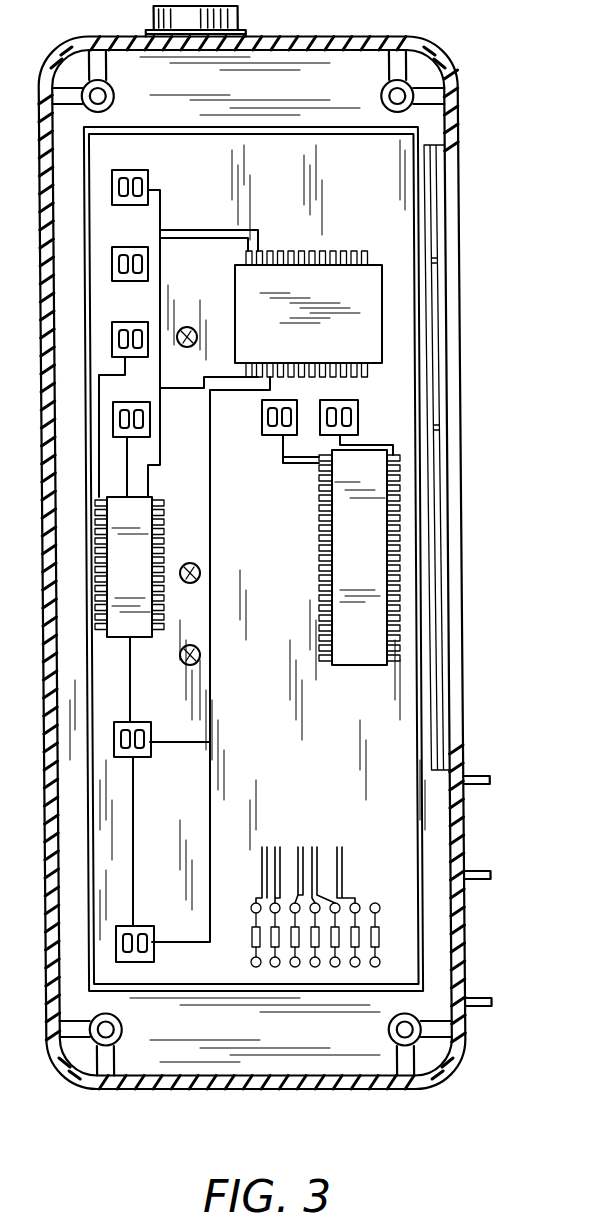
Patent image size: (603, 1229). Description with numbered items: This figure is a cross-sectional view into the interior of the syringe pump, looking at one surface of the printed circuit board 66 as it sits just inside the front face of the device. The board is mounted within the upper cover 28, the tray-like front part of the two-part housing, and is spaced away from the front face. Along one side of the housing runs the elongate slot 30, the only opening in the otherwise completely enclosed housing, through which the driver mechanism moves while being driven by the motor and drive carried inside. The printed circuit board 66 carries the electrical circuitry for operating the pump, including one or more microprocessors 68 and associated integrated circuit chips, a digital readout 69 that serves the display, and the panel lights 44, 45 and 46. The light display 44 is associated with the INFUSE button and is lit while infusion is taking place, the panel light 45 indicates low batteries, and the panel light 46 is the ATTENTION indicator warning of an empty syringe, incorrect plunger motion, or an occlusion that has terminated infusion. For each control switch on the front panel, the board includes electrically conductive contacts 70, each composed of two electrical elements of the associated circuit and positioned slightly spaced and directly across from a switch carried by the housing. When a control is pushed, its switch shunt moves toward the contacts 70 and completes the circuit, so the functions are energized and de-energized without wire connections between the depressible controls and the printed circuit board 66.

The upper (front) cover 28 is at (347, 1092).
The elongate slot 30 is at (455, 531).
The light display 44 is at (190, 327).
The panel light 45 is at (200, 570).
The panel light 46 is at (200, 654).
The printed circuit board 66 is at (318, 748).
The microprocessor 68 is at (141, 526).
The digital readout 69 is at (380, 278).
The electrically conductive contacts 70 is at (133, 170).